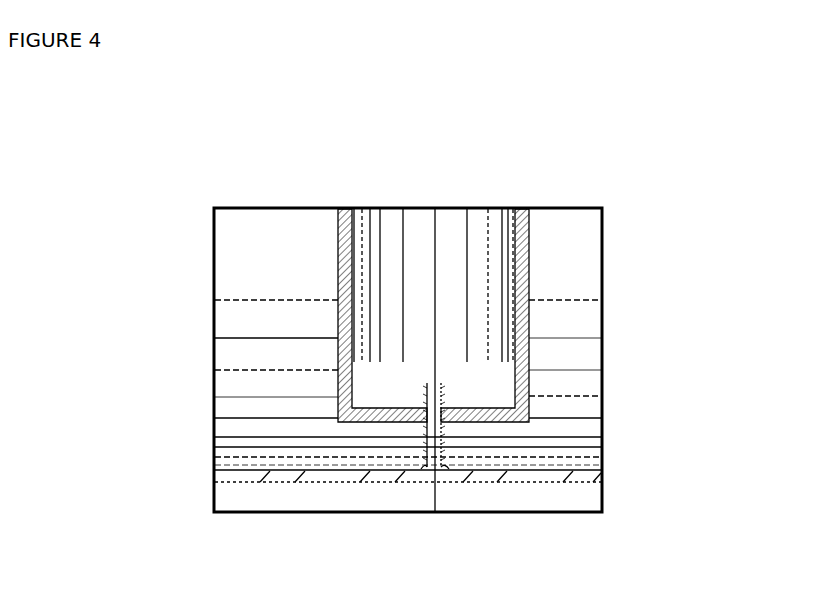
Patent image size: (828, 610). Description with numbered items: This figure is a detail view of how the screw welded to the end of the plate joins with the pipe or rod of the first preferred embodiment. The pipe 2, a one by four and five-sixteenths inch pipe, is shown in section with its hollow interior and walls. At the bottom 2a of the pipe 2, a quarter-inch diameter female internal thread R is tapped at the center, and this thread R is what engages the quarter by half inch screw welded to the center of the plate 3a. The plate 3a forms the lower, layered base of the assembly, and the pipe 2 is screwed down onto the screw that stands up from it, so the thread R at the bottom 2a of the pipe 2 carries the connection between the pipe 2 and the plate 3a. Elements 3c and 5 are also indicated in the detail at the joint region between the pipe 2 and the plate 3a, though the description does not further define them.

The pipe 2 is at (531, 320).
The bottom of the pipe 2a is at (458, 400).
The channel 3c is at (447, 462).
The layer 5 is at (427, 437).
The plate 3a is at (293, 487).
The female internal thread R is at (422, 401).